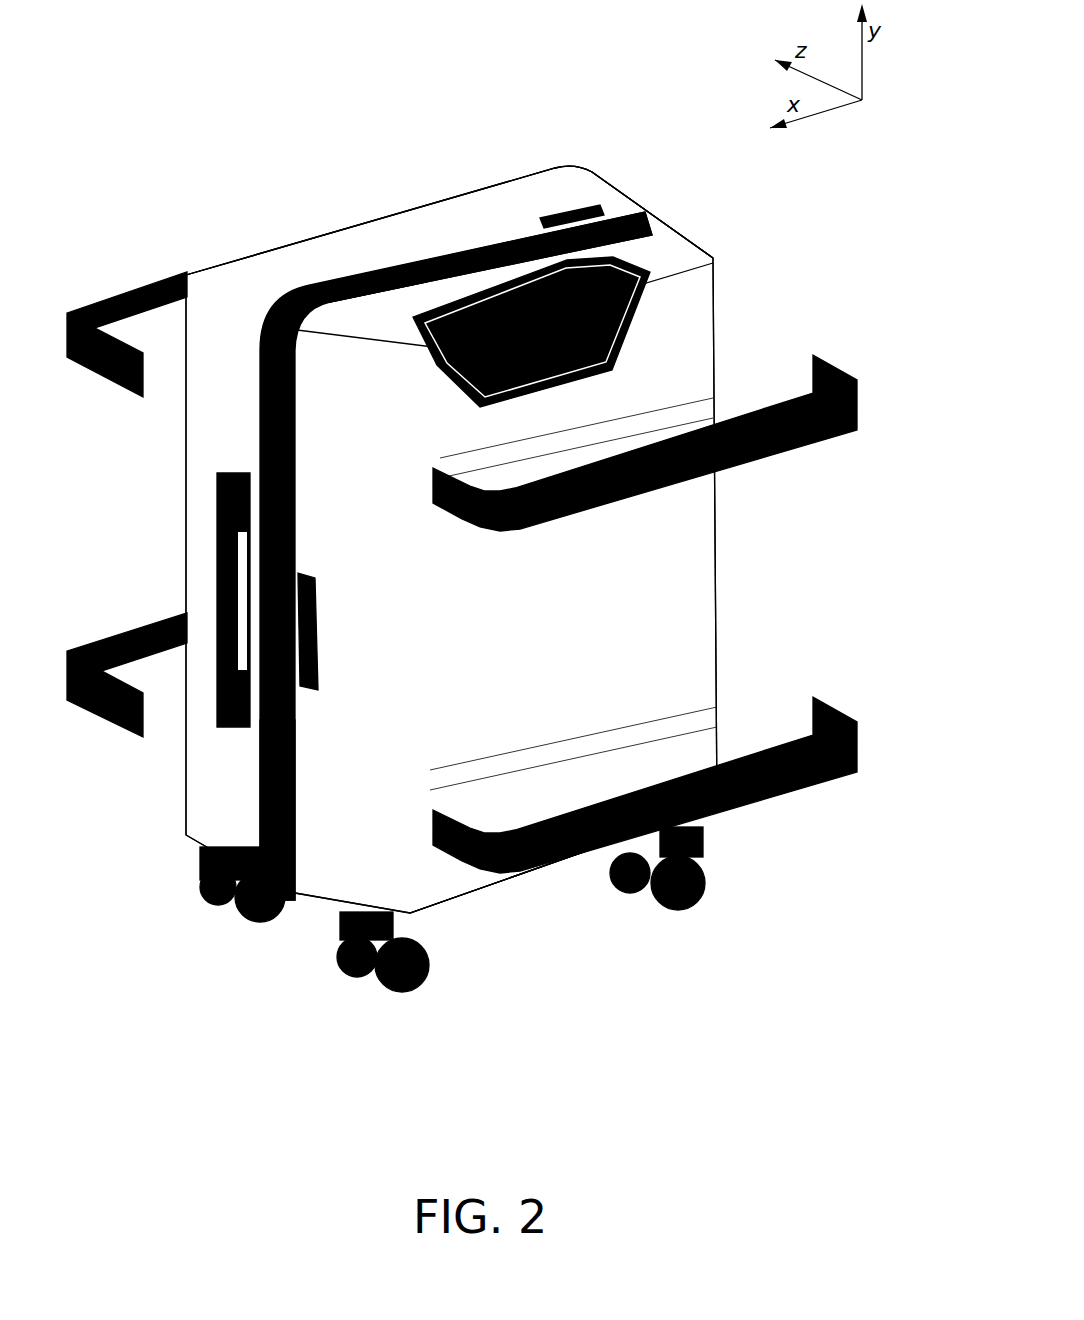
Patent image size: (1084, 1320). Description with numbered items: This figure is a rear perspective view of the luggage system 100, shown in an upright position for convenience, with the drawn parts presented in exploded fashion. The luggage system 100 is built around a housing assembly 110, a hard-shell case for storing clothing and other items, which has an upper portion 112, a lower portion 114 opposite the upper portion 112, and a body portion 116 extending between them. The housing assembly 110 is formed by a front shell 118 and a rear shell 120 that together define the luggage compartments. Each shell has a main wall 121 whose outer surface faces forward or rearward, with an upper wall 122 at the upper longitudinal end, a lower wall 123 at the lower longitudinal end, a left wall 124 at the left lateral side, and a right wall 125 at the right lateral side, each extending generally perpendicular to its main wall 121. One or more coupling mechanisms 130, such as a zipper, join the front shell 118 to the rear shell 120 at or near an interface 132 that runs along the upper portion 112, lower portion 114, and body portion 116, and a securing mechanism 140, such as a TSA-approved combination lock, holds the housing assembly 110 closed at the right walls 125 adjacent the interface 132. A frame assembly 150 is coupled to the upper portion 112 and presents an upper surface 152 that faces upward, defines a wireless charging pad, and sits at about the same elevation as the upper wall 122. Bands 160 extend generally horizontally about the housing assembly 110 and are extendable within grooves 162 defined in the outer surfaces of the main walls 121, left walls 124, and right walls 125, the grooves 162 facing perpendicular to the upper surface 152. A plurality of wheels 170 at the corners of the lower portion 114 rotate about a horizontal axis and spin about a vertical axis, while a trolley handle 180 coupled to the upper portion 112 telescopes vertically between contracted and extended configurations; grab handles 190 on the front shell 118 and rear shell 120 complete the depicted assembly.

The luggage system 100 is at (690, 1032).
The housing assembly 110 is at (712, 573).
The upper portion 112 is at (790, 283).
The lower portion 114 is at (765, 700).
The body portion 116 is at (805, 495).
The front shell 118 is at (464, 205).
The rear shell 120 is at (695, 632).
The main wall 121 is at (523, 600).
The upper wall 122 is at (563, 200).
The lower wall 123 is at (452, 912).
The left wall 124 is at (683, 220).
The right wall 125 is at (197, 540).
The coupling mechanism 130 is at (295, 527).
The interface 132 is at (293, 740).
The securing mechanism 140 is at (332, 638).
The frame assembly 150 is at (330, 243).
The upper surface 152 is at (283, 272).
The band 160 is at (125, 303).
The groove 162 is at (641, 385).
The wheel 170 is at (258, 922).
The trolley handle 180 is at (640, 268).
The grab handle 190 is at (215, 500).